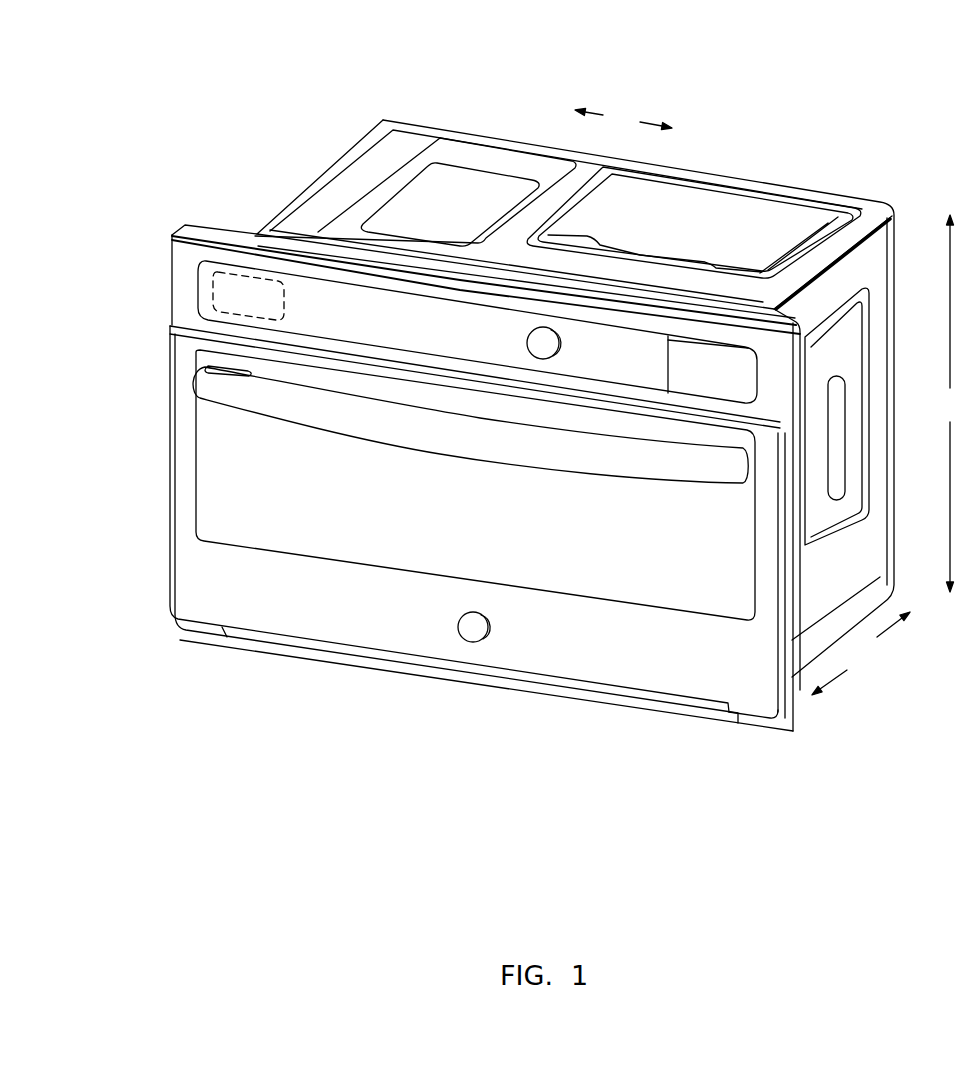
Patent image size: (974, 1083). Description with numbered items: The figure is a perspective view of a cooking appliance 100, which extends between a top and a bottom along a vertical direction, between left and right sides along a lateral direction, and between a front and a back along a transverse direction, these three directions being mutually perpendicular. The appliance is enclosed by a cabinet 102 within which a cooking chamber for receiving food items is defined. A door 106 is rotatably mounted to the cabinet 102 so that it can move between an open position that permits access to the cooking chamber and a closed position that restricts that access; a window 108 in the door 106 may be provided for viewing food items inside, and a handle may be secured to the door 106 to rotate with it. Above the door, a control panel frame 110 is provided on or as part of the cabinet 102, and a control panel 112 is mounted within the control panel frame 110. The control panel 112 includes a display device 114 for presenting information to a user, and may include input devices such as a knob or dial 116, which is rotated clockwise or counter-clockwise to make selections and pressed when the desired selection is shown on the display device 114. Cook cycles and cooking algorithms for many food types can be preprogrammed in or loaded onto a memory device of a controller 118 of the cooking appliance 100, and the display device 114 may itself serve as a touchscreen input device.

The cooking appliance 100 is at (830, 120).
The cabinet 102 is at (870, 208).
The door 106 is at (207, 590).
The window 108 is at (237, 487).
The control panel frame 110 is at (185, 258).
The control panel 112 is at (307, 293).
The display device 114 is at (730, 353).
The knob or dial 116 is at (545, 340).
The controller 118 is at (255, 277).